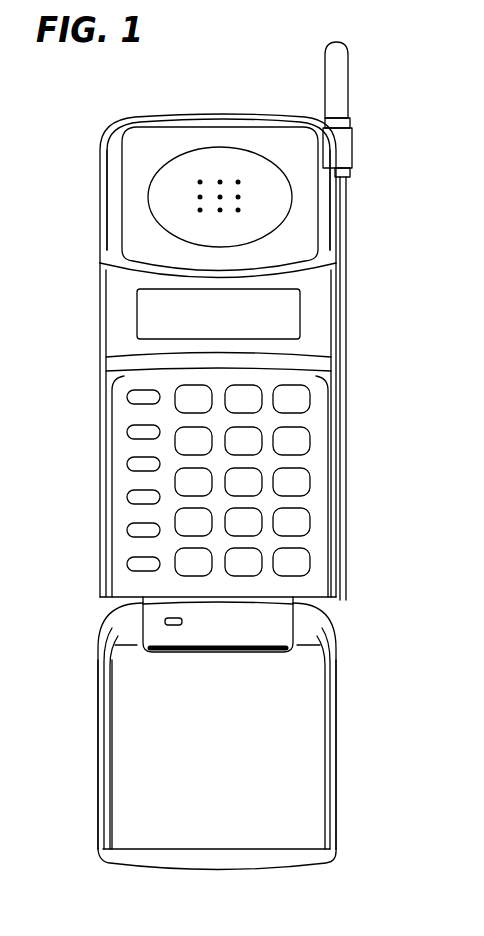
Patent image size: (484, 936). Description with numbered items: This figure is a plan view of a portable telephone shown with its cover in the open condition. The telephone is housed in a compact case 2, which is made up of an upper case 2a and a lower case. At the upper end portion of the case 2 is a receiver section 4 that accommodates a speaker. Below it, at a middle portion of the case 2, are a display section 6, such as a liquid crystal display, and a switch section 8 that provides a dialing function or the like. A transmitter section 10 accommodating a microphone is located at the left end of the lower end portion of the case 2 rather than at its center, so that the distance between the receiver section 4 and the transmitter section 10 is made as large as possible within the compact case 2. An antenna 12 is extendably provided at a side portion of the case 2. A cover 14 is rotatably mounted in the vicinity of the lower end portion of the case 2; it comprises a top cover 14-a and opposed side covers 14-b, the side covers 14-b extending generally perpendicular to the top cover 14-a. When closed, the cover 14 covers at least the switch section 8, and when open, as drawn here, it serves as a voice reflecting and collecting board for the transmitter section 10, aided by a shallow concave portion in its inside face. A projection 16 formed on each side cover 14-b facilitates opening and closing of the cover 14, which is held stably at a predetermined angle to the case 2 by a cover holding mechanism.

The case 2 is at (227, 106).
The upper case 2a is at (323, 230).
The receiver section 4 is at (167, 202).
The display section 6 is at (167, 315).
The switch section 8 is at (300, 455).
The transmitter section 10 is at (153, 650).
The antenna 12 is at (335, 77).
The cover 14 is at (335, 875).
The top cover 14-a is at (305, 750).
The side covers 14-b is at (98, 728).
The projection 16 is at (98, 828).